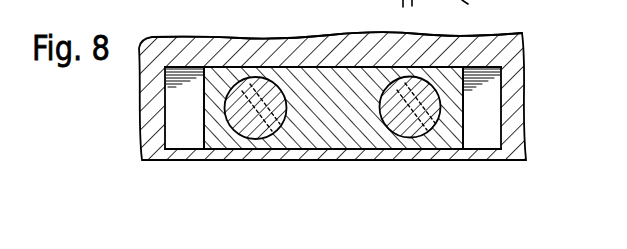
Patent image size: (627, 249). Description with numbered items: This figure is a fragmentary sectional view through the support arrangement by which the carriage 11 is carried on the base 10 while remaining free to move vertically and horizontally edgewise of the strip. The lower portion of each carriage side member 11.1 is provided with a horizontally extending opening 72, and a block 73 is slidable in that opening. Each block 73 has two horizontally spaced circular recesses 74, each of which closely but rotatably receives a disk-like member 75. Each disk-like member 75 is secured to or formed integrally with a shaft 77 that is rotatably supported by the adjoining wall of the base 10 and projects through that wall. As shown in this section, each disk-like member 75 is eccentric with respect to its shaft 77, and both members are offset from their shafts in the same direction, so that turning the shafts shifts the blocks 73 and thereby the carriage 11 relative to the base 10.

The base 10 is at (178, 108).
The carriage 11 is at (295, 29).
The carriage side member 11.1 is at (512, 44).
The horizontally extending opening 72 is at (188, 144).
The block 73 is at (337, 80).
The circular recesses 74 is at (253, 128).
The disk-like member 75 is at (242, 128).
The shaft 77 is at (265, 137).